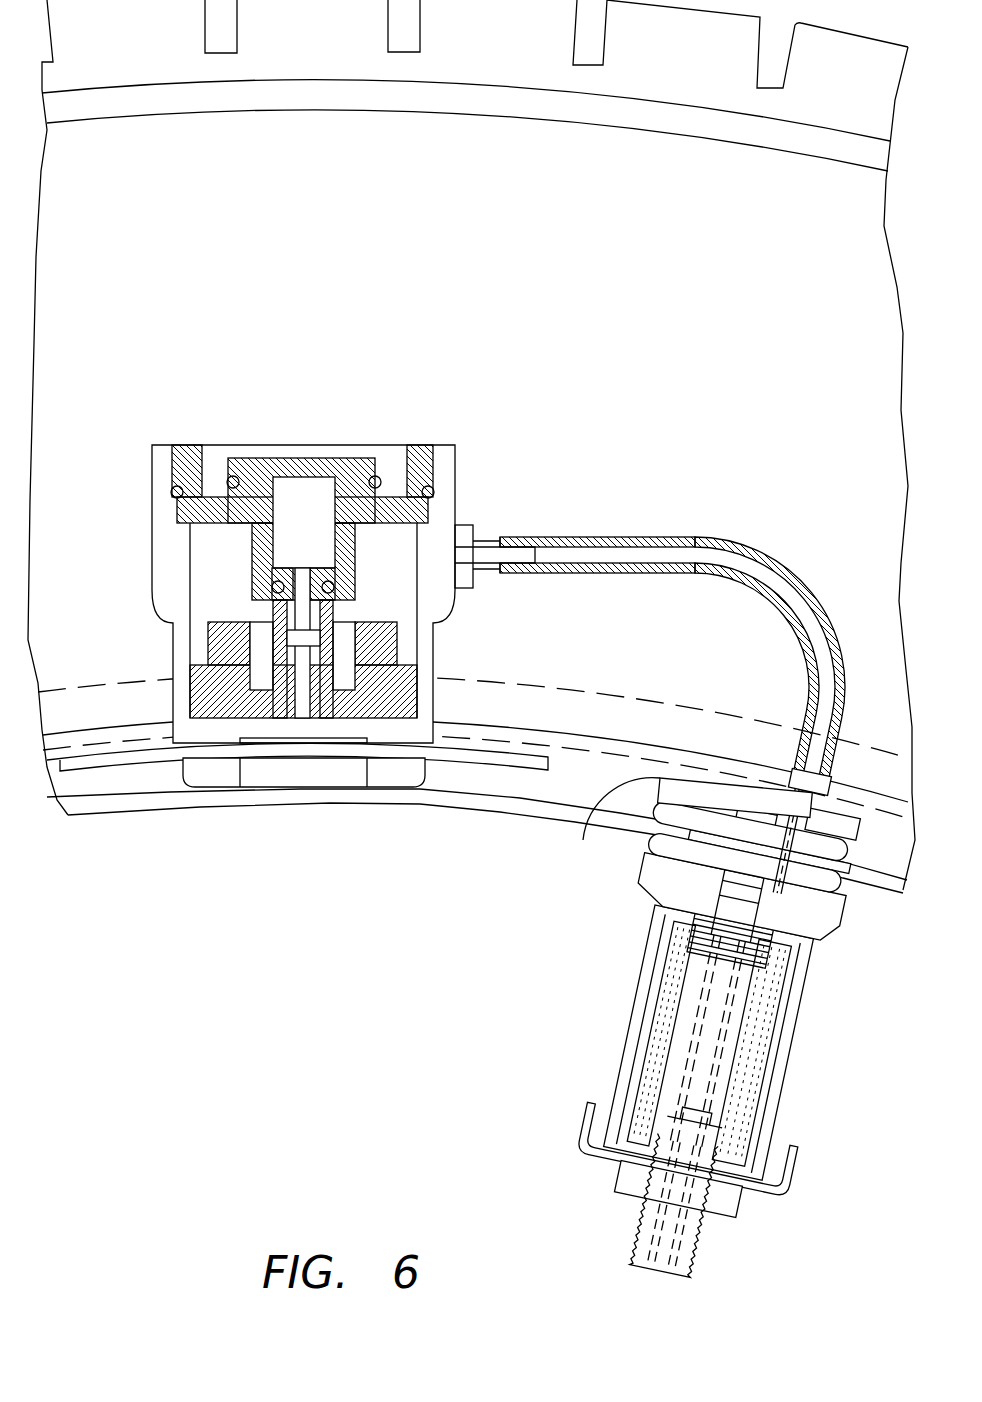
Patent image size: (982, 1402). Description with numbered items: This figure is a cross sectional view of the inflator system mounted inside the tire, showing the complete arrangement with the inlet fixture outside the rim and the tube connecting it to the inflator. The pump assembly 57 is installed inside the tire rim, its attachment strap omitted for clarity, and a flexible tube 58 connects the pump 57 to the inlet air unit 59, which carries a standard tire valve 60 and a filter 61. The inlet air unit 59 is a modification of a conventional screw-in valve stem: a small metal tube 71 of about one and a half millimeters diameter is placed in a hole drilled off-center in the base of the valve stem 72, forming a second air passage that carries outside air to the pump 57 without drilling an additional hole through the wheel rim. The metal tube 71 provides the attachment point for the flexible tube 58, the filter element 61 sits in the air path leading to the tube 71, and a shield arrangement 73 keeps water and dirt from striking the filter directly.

The pump assembly 57 is at (455, 479).
The tube 58 is at (605, 537).
The inlet air unit 59 is at (722, 980).
The standard tire valve 60 is at (674, 1205).
The filter 61 is at (751, 1052).
The tube 71 is at (798, 834).
The valve stem 72 is at (753, 835).
The shield arrangement 73 is at (687, 1149).